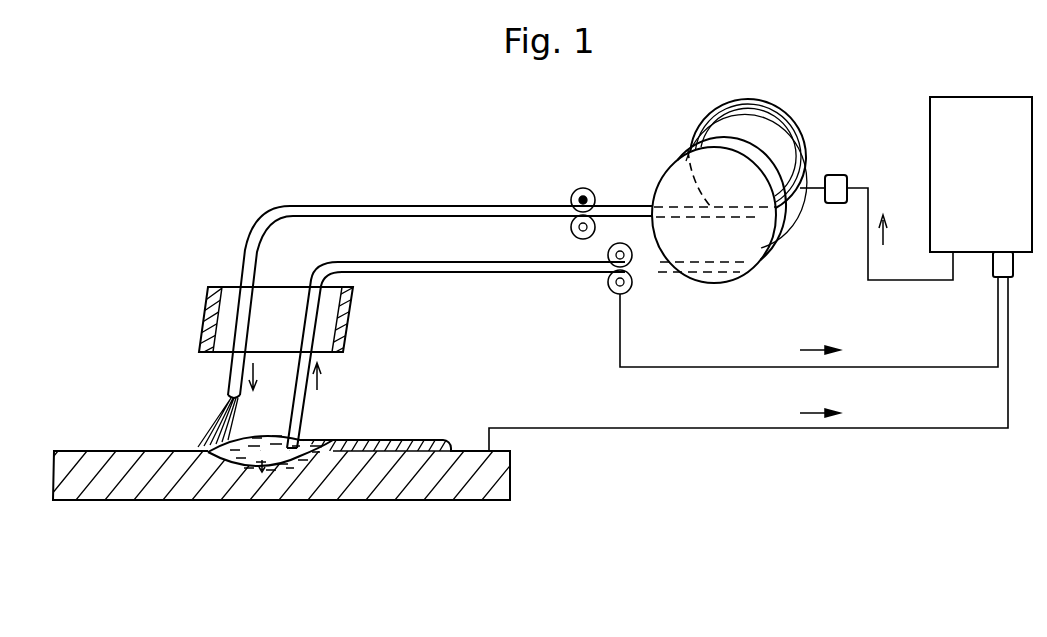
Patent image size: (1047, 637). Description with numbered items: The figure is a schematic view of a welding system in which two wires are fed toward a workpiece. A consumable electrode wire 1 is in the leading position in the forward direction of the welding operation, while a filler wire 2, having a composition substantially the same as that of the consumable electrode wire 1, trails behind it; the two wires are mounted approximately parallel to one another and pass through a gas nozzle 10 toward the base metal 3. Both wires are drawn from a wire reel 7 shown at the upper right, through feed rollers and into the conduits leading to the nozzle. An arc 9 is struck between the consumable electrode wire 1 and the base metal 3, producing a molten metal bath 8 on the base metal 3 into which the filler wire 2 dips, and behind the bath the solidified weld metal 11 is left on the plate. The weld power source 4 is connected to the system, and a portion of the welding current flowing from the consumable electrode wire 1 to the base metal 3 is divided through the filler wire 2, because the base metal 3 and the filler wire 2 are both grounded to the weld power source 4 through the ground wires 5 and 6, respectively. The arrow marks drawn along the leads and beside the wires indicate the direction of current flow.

The consumable electrode wire 1 is at (230, 376).
The filler wire 2 is at (303, 402).
The base metal 3 is at (507, 474).
The weld power source 4 is at (963, 200).
The ground wire 5 is at (868, 428).
The ground wire 6 is at (890, 367).
The wire reel 7 is at (670, 173).
The molten metal bath 8 is at (262, 463).
The arc 9 is at (222, 418).
The gas nozzle 10 is at (204, 318).
The weld metal 11 is at (412, 442).